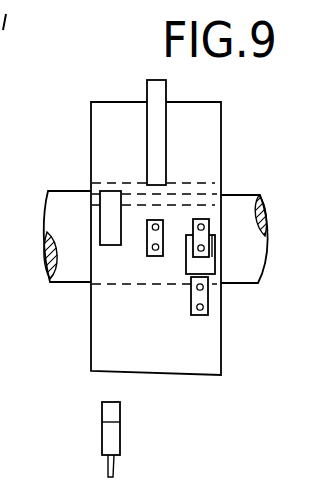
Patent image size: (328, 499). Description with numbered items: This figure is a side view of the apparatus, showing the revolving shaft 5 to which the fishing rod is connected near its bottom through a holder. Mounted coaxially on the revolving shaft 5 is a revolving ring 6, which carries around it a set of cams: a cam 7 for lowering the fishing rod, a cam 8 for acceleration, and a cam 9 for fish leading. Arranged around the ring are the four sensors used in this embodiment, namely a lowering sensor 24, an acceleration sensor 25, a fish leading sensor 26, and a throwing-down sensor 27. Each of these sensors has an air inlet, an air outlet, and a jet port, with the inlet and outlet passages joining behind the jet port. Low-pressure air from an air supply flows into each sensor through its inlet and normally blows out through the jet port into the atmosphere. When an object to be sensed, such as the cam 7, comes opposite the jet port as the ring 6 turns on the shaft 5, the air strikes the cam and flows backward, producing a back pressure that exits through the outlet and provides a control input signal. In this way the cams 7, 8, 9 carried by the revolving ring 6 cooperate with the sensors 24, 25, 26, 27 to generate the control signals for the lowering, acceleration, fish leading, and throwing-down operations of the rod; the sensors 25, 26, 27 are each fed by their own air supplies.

The revolving shaft 5 is at (62, 202).
The revolving ring 6 is at (213, 138).
The cam for lowering the fishing rod 7 is at (108, 197).
The cam for acceleration 8 is at (147, 87).
The cam for fish leading 9 is at (200, 265).
The lowering sensor 24 is at (108, 402).
The acceleration sensor 25 is at (157, 258).
The fish leading sensor 26 is at (208, 302).
The throwing-down sensor 27 is at (206, 219).